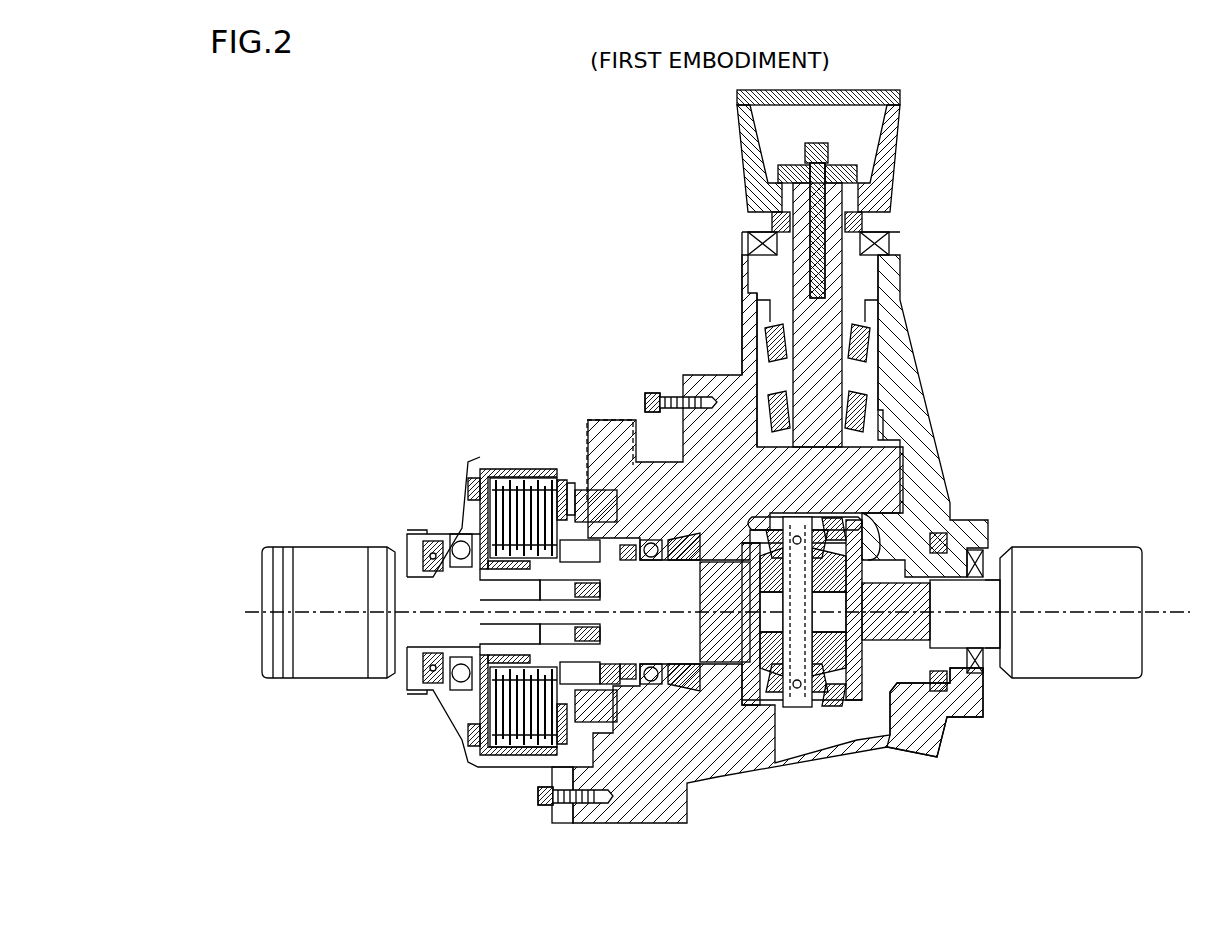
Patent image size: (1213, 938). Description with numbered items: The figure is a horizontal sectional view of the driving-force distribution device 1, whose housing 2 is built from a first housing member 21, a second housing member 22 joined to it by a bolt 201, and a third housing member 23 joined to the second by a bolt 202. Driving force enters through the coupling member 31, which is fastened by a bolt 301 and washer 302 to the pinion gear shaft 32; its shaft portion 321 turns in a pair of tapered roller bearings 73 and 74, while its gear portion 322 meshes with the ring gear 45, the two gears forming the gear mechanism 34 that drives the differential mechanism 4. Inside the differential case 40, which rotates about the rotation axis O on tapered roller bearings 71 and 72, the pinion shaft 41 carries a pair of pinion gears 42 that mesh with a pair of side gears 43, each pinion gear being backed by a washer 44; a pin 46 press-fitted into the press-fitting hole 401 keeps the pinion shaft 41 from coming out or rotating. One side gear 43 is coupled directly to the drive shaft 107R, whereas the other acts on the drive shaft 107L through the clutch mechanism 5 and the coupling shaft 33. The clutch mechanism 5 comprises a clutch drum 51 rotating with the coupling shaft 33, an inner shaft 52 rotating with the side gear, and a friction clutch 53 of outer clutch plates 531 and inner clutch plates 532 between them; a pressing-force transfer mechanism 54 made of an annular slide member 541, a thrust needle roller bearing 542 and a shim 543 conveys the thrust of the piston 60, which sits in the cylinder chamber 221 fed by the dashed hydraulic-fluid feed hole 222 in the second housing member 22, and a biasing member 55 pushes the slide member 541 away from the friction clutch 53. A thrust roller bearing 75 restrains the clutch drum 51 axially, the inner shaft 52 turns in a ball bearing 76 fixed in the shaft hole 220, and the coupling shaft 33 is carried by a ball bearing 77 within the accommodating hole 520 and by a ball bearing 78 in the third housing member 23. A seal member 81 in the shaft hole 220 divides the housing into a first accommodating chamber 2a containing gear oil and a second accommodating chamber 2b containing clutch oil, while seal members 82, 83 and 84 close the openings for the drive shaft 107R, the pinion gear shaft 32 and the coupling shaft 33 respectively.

The driving-force distribution device 1 is at (975, 207).
The housing 2 is at (680, 857).
The first accommodating chamber 2a is at (883, 700).
The second accommodating chamber 2b is at (477, 705).
The first housing member 21 is at (690, 826).
The second housing member 22 is at (660, 807).
The third housing member 23 is at (560, 812).
The bolt 201 is at (668, 398).
The bolt 202 is at (548, 808).
The shaft hole 220 is at (643, 684).
The cylinder chamber 221 is at (717, 777).
The hydraulic-fluid feed hole 222 is at (633, 462).
The coupling member 31 is at (902, 150).
The bolt 301 is at (805, 152).
The washer 302 is at (780, 176).
The pinion gear shaft 32 is at (982, 366).
The shaft portion 321 is at (845, 400).
The gear portion 322 is at (877, 467).
The coupling shaft 33 is at (407, 688).
The gear mechanism 34 is at (740, 445).
The differential mechanism 4 is at (910, 540).
The differential case 40 is at (902, 535).
The press-fitting hole 401 is at (765, 525).
The pinion shaft 41 is at (797, 700).
The pinion gear 42 is at (885, 543).
The side gear 43 is at (770, 697).
The washer 44 is at (838, 528).
The ring gear 45 is at (790, 745).
The pin 46 is at (822, 522).
The clutch mechanism 5 is at (497, 468).
The clutch drum 51 is at (480, 470).
The inner shaft 52 is at (520, 650).
The accommodating hole 520 is at (560, 592).
The friction clutch 53 is at (525, 478).
The outer clutch plate 531 is at (516, 750).
The inner clutch plate 532 is at (497, 750).
The pressing-force transfer mechanism 54 is at (595, 372).
The slide member 541 is at (560, 480).
The thrust needle roller bearing 542 is at (571, 482).
The shim 543 is at (565, 480).
The biasing member 55 is at (652, 560).
The piston 60 is at (598, 490).
The tapered roller bearing 71 is at (983, 523).
The tapered roller bearing 72 is at (728, 562).
The tapered roller bearing 73 is at (775, 337).
The tapered roller bearing 74 is at (773, 425).
The thrust roller bearing 75 is at (470, 496).
The ball bearing 76 is at (618, 664).
The ball bearing 77 is at (560, 598).
The ball bearing 78 is at (460, 545).
The seal member 81 is at (690, 561).
The seal member 82 is at (984, 672).
The seal member 83 is at (880, 232).
The seal member 84 is at (437, 574).
The drive shaft 107L is at (383, 548).
The drive shaft 107R is at (1088, 545).
The rotation axis O is at (1147, 612).